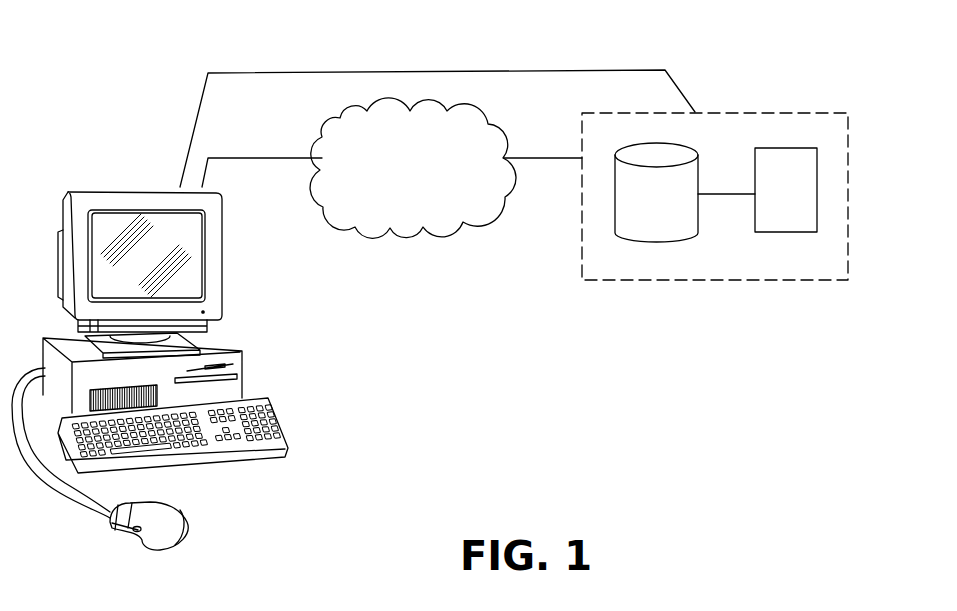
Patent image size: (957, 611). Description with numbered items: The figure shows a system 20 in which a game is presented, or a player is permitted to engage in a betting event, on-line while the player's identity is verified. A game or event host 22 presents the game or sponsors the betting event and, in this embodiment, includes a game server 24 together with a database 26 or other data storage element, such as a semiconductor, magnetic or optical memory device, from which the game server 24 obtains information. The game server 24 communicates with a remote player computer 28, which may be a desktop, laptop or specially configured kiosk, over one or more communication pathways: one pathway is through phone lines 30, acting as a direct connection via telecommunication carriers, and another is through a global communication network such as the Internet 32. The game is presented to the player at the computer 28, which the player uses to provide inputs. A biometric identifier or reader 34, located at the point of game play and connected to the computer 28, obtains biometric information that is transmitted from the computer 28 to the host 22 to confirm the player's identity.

The system 20 is at (483, 338).
The game or event host 22 is at (762, 108).
The game server 24 is at (785, 217).
The database 26 is at (670, 232).
The remote player computer 28 is at (290, 362).
The phone lines 30 is at (445, 72).
The Internet 32 is at (487, 210).
The biometric identifier or reader 34 is at (190, 521).